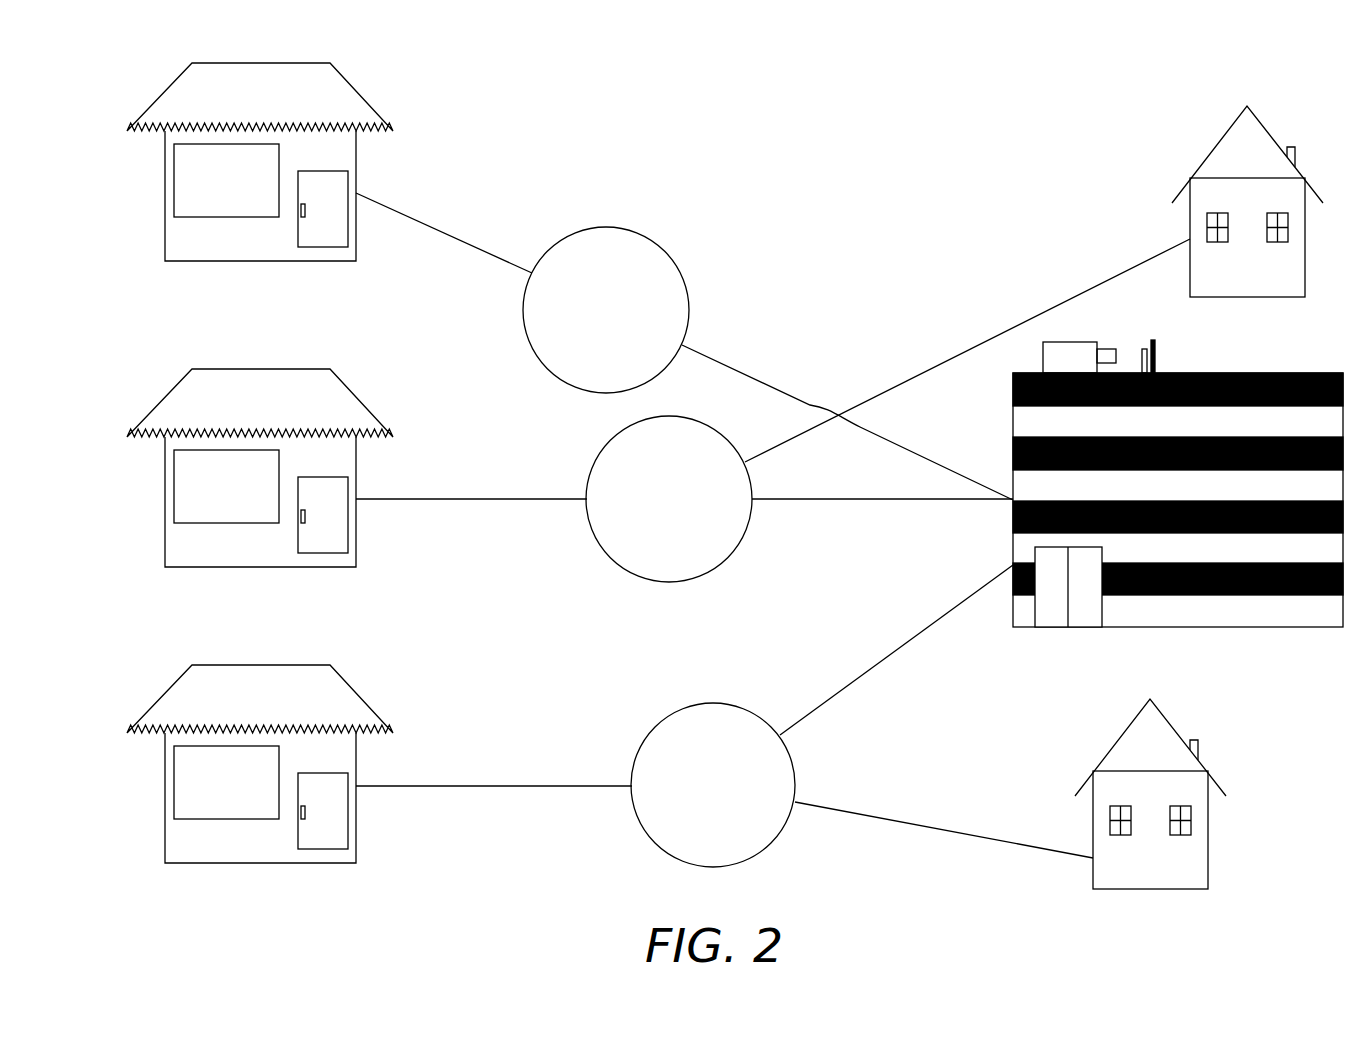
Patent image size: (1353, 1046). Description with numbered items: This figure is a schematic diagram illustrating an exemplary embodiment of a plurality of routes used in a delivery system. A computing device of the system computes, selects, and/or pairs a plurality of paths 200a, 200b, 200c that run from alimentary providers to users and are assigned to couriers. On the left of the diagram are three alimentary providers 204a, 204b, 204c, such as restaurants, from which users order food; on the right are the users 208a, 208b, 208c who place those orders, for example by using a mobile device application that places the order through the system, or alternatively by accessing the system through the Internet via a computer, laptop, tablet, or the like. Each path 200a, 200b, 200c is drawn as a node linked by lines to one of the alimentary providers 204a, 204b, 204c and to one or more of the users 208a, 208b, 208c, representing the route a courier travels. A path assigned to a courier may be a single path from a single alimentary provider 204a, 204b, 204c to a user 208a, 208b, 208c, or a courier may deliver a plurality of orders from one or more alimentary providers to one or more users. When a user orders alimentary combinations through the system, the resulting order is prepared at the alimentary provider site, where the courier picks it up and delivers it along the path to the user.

The path 200a is at (628, 322).
The path 200b is at (694, 509).
The path 200c is at (737, 794).
The alimentary provider 204a is at (362, 93).
The alimentary provider 204b is at (357, 395).
The alimentary provider 204c is at (344, 682).
The user 208a is at (1221, 140).
The user 208b is at (1013, 548).
The user 208c is at (1208, 813).